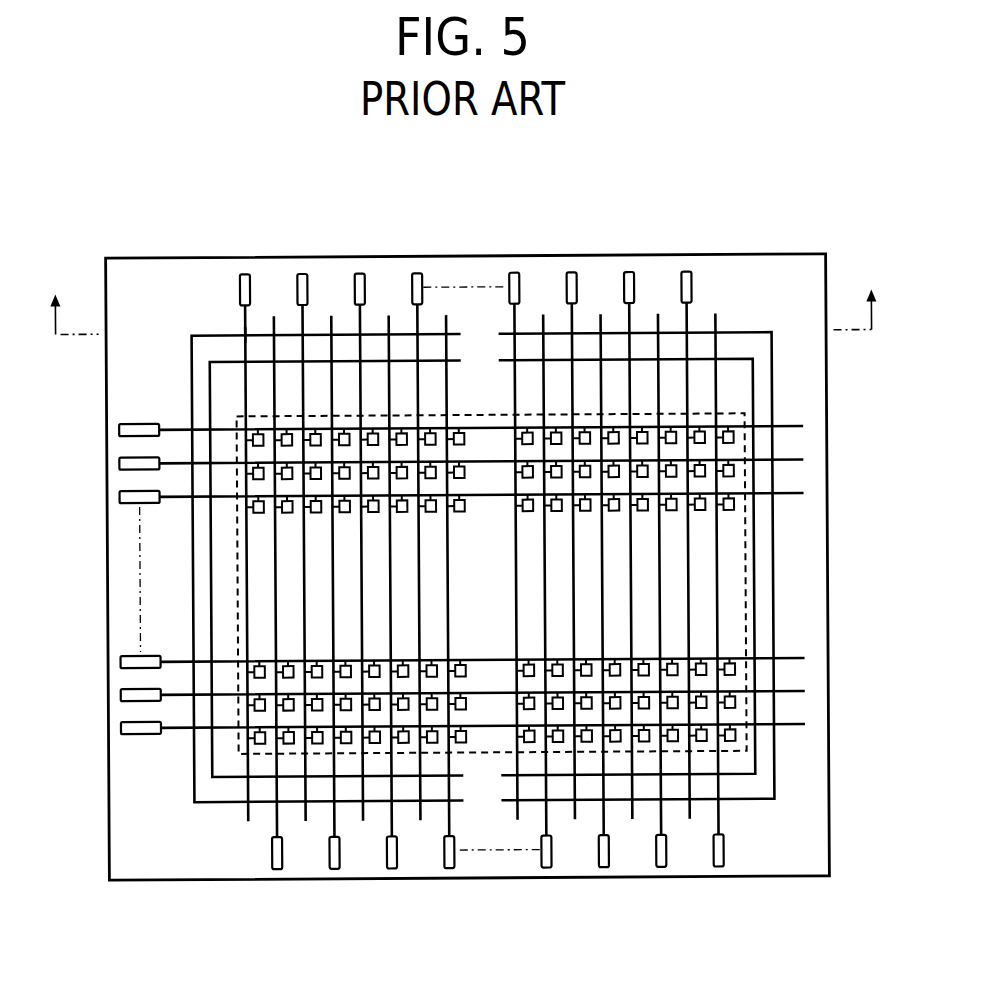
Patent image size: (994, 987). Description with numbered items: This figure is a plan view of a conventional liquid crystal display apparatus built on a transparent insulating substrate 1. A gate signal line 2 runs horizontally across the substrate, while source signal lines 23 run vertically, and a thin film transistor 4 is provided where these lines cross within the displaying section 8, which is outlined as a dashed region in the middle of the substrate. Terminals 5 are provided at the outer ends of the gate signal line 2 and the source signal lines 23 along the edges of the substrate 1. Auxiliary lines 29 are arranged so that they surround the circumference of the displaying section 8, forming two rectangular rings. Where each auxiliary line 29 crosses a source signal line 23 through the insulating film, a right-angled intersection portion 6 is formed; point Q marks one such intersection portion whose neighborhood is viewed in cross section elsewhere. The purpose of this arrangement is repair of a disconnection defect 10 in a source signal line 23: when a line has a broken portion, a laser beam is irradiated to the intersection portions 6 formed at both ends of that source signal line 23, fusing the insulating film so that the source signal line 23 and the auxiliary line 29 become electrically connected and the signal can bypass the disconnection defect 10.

The transparent insulating substrate 1 is at (766, 266).
The gate signal line 2 is at (788, 425).
The thin film transistor 4 is at (735, 738).
The terminals 5 is at (120, 430).
The intersection portions 6 is at (482, 940).
The displaying section 8 is at (757, 521).
The disconnection defect 10 is at (247, 603).
The source signal lines 23 is at (417, 320).
The auxiliary lines 29 is at (210, 582).
The point Q is at (247, 334).